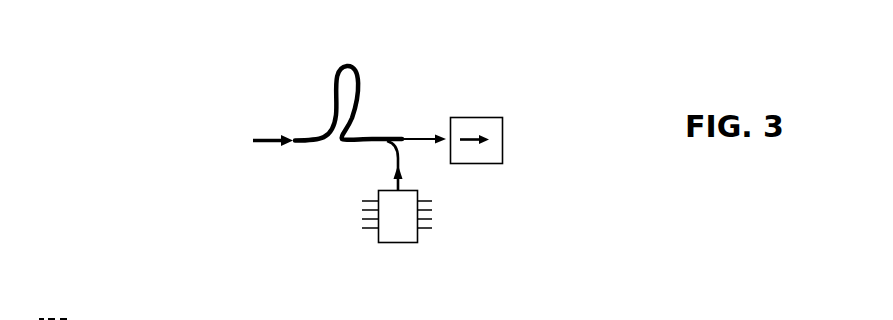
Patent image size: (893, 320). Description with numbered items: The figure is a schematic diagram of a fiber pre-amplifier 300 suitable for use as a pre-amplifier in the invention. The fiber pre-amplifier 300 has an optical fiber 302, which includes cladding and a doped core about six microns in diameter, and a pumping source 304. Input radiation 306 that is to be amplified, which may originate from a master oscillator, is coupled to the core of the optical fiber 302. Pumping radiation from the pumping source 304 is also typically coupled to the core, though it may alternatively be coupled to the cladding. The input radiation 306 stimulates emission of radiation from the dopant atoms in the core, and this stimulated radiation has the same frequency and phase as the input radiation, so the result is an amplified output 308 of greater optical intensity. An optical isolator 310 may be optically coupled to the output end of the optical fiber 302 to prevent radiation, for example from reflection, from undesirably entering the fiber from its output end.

The fiber pre-amplifier 300 is at (104, 89).
The optical fiber 302 is at (359, 65).
The pumping source 304 is at (395, 242).
The input radiation 306 is at (262, 140).
The amplified output 308 is at (420, 133).
The optical isolator 310 is at (477, 117).